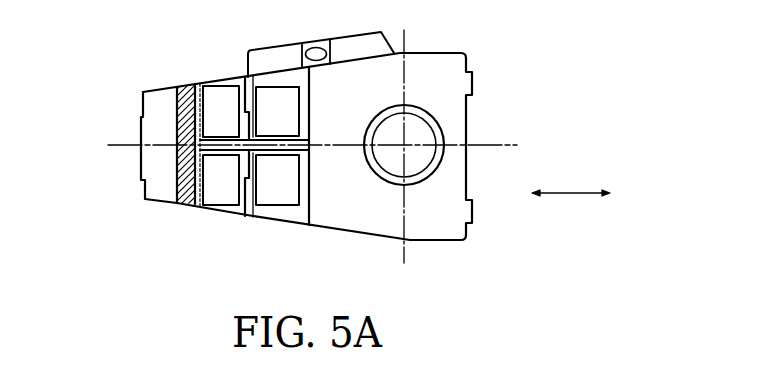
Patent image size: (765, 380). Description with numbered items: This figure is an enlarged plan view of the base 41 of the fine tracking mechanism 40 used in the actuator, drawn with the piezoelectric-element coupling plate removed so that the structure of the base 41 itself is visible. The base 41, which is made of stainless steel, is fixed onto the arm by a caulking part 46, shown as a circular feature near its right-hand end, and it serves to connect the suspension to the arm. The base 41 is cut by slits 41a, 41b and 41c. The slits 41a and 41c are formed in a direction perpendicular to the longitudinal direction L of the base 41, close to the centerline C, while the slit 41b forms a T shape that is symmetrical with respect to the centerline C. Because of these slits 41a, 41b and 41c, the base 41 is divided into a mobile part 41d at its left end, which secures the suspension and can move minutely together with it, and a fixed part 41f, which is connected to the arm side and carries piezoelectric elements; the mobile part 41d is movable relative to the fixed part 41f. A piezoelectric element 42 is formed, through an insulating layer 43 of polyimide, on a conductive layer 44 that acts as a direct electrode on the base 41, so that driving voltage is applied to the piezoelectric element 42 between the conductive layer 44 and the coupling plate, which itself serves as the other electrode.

The fine tracking mechanism 40 is at (92, 45).
The base 41 is at (470, 122).
The slit 41a is at (194, 83).
The slit 41b is at (242, 110).
The slit 41c is at (232, 211).
The mobile part 41d is at (157, 190).
The fixed part 41f is at (297, 217).
The piezoelectric element 42 is at (310, 118).
The insulating layer 43 is at (181, 86).
The conductive layer 44 is at (252, 78).
The caulking part 46 is at (426, 104).